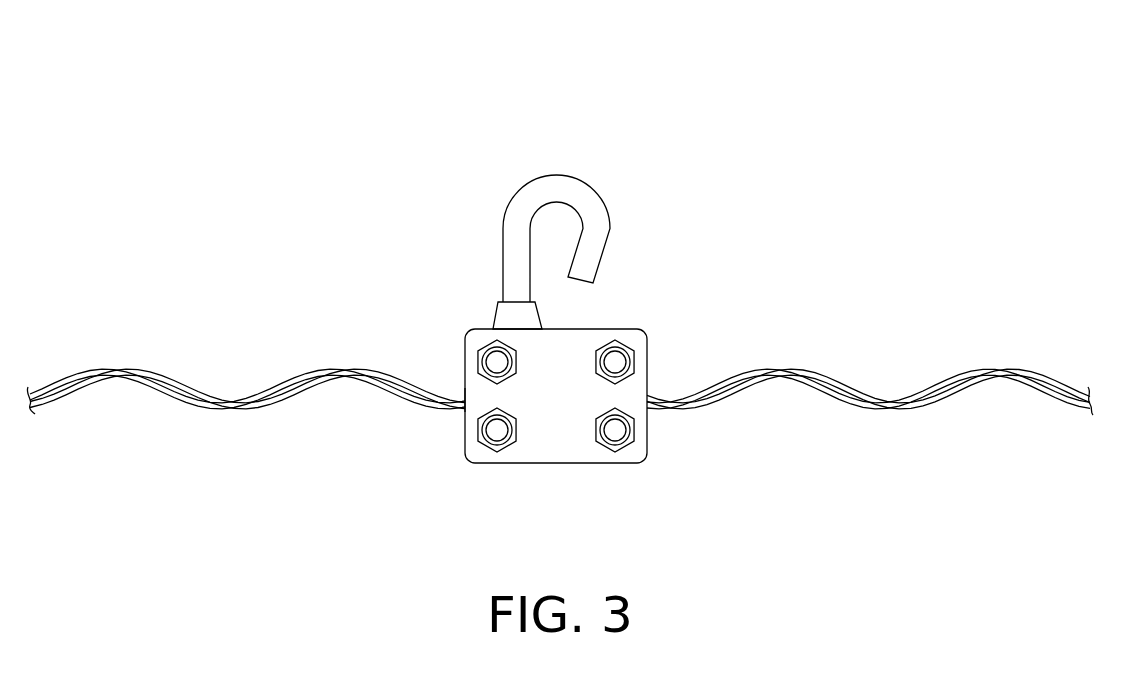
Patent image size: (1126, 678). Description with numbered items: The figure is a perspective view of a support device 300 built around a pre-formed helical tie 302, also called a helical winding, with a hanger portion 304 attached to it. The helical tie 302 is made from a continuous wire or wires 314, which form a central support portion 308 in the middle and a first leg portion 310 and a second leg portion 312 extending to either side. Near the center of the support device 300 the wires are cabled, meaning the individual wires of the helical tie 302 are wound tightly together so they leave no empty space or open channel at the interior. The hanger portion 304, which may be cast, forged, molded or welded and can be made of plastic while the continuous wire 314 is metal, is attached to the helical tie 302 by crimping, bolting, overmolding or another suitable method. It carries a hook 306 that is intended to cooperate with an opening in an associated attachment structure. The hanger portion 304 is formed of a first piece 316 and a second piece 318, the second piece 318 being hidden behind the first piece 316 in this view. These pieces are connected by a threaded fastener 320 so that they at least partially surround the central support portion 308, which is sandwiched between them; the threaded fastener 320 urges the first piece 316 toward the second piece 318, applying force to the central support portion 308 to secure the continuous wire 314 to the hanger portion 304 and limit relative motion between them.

The support device 300 is at (456, 97).
The helical tie 302 is at (777, 373).
The hanger portion 304 is at (663, 160).
The hook 306 is at (556, 175).
The central support portion 308 is at (462, 402).
The first leg portion 310 is at (345, 372).
The second leg portion 312 is at (998, 373).
The continuous wire 314 is at (232, 398).
The first piece 316 is at (552, 463).
The second piece 318 is at (471, 329).
The threaded fastener 320 is at (478, 433).